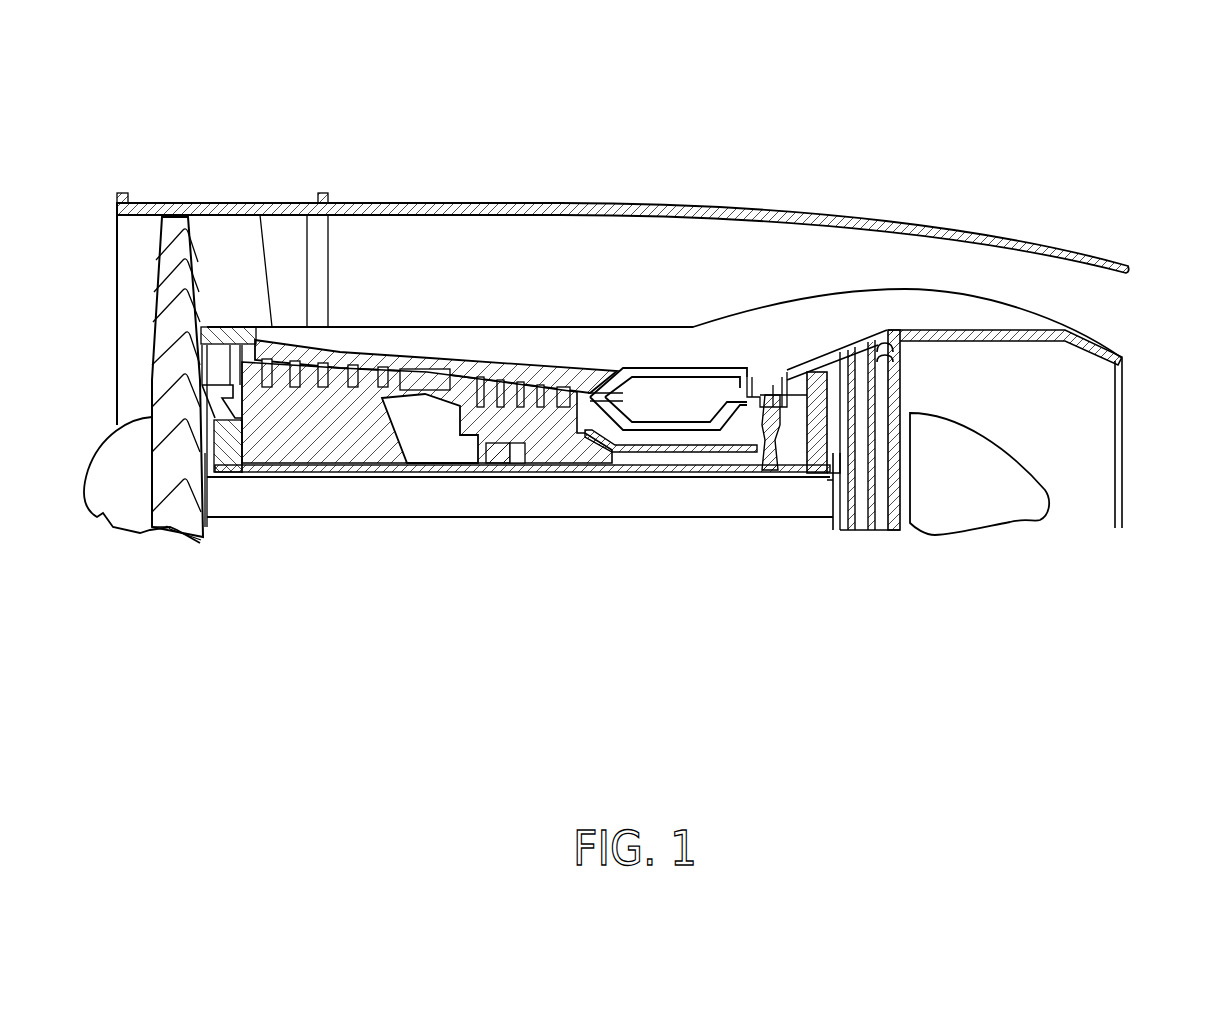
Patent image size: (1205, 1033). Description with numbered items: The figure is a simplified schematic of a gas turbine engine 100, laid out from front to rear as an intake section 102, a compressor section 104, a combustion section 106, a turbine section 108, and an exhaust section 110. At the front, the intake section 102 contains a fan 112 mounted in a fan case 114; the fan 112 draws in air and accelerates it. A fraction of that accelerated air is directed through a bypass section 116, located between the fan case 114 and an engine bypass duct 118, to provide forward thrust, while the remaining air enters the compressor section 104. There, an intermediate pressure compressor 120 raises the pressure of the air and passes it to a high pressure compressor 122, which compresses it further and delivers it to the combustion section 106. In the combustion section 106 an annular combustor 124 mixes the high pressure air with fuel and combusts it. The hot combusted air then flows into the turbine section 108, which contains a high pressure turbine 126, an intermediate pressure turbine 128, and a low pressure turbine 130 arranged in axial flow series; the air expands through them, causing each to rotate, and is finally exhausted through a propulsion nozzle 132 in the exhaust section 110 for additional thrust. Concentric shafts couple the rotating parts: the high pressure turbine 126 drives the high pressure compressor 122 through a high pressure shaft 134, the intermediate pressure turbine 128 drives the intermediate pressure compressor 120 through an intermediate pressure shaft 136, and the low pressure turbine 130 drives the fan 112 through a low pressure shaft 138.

The gas turbine engine 100 is at (372, 162).
The intake section 102 is at (215, 612).
The compressor section 104 is at (522, 612).
The combustion section 106 is at (717, 612).
The turbine section 108 is at (907, 612).
The exhaust section 110 is at (1060, 612).
The fan 112 is at (160, 333).
The fan case 114 is at (233, 201).
The bypass section 116 is at (547, 217).
The engine bypass duct 118 is at (612, 325).
The intermediate pressure compressor 120 is at (320, 450).
The high pressure compressor 122 is at (530, 425).
The annular combustor 124 is at (718, 380).
The high pressure turbine 126 is at (773, 390).
The intermediate pressure turbine 128 is at (833, 370).
The low pressure turbine 130 is at (892, 358).
The propulsion nozzle 132 is at (1103, 435).
The high pressure shaft 134 is at (623, 447).
The intermediate pressure shaft 136 is at (695, 468).
The low pressure shaft 138 is at (803, 503).